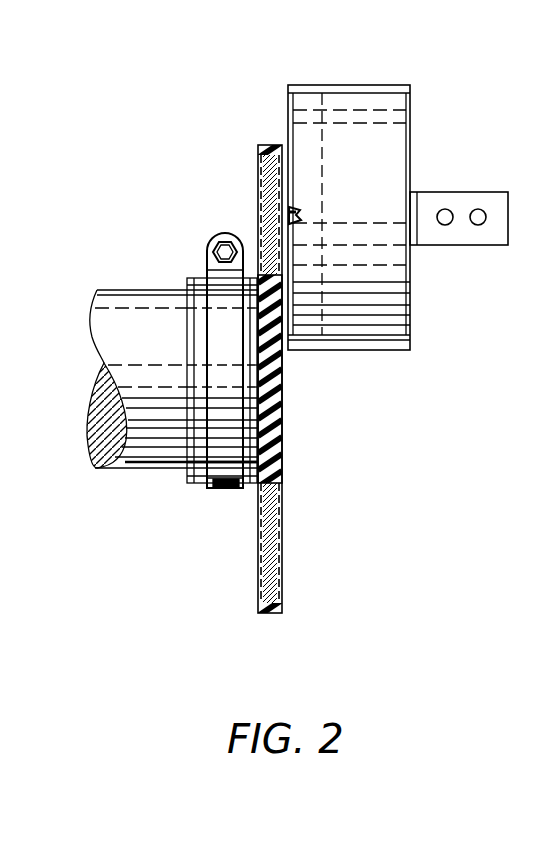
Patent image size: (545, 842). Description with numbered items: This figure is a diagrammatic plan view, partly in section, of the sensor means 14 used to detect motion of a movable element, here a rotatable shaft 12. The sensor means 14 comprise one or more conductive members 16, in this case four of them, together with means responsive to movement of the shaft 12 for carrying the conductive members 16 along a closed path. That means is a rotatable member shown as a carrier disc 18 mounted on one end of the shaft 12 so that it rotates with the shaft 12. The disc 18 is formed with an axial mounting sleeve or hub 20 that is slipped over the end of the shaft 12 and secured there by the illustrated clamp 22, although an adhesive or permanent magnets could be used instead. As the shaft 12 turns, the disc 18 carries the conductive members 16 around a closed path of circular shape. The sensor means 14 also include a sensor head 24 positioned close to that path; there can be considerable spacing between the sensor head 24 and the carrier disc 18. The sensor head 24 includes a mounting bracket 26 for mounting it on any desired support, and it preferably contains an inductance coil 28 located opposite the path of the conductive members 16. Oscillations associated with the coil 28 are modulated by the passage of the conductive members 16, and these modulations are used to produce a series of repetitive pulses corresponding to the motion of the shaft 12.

The shaft 12 is at (133, 288).
The sensor means 14 is at (430, 44).
The conductive members 16 is at (258, 190).
The carrier disc 18 is at (282, 467).
The axial mounting sleeve 20 is at (193, 485).
The clamp 22 is at (228, 492).
The sensor head 24 is at (390, 337).
The mounting bracket 26 is at (438, 192).
The inductance coil 28 is at (328, 340).